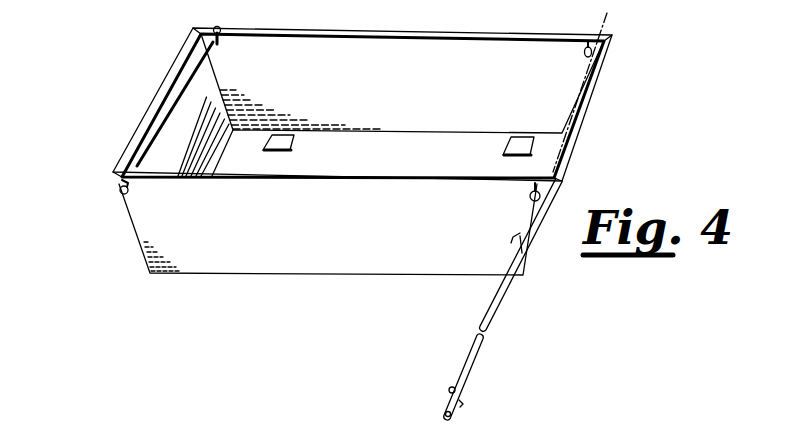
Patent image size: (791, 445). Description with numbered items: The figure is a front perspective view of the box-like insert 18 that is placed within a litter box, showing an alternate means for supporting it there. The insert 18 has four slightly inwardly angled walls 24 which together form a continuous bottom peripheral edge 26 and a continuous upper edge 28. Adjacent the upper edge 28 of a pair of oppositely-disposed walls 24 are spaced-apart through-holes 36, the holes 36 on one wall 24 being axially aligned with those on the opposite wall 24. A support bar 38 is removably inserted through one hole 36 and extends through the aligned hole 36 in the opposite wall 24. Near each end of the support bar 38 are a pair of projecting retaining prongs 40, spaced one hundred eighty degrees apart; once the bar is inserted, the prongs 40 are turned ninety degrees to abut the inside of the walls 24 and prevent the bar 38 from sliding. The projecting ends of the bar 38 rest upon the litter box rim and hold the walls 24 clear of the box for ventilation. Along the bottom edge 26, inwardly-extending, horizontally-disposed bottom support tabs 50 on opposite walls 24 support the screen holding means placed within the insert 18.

The insert 18 is at (116, 194).
The angled walls 24 is at (278, 266).
The bottom peripheral edge 26 is at (387, 134).
The upper edge 28 is at (157, 97).
The through-holes 36 is at (586, 57).
The support bars 38 is at (190, 88).
The retaining prongs 40 is at (221, 42).
The bottom support tabs 50 is at (290, 141).